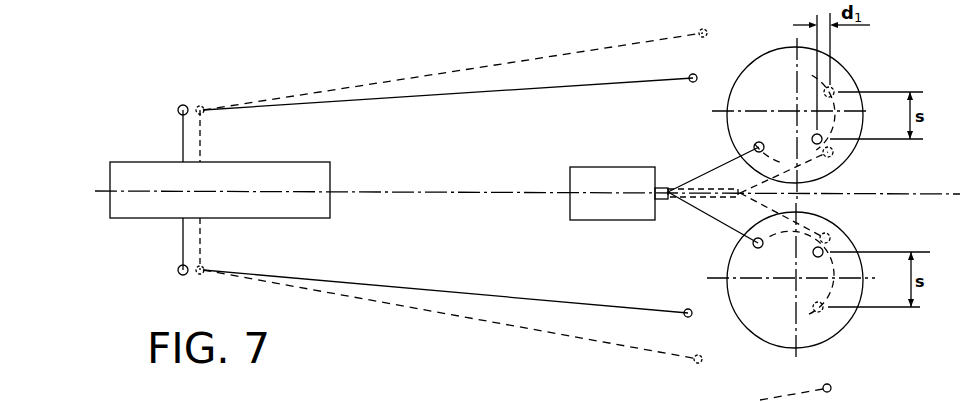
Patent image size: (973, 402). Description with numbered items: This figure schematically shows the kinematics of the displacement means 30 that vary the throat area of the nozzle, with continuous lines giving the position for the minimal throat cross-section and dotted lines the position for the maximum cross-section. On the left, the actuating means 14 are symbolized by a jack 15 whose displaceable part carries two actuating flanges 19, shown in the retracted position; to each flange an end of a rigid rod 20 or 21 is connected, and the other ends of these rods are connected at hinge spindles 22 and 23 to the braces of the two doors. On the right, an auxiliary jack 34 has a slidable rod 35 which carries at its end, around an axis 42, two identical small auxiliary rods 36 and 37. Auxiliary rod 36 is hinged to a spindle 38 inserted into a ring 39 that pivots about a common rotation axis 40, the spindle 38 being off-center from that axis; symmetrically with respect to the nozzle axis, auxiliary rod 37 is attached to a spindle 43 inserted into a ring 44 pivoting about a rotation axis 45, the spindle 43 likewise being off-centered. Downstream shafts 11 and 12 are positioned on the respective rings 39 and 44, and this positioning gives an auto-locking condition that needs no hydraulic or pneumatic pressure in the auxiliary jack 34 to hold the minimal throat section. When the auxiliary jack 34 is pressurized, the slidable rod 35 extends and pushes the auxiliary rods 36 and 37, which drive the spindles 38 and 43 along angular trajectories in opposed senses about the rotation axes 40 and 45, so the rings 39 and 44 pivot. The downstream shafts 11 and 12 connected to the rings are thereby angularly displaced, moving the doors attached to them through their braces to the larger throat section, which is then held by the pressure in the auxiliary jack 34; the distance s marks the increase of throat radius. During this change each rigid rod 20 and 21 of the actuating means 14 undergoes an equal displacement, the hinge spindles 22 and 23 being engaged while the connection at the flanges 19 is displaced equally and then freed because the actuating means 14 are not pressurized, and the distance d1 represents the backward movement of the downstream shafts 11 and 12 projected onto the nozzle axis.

The downstream shaft 11 is at (833, 153).
The downstream shaft 12 is at (830, 240).
The actuating means 14 is at (195, 188).
The jack 15 is at (125, 173).
The actuating flanges 19 is at (183, 132).
The rigid rod 20 is at (408, 98).
The rigid rod 21 is at (407, 288).
The hinge spindle 22 is at (690, 75).
The hinge spindle 23 is at (687, 318).
The displacement means 30 is at (896, 188).
The auxiliary jack 34 is at (570, 183).
The slidable rod 35 is at (661, 189).
The auxiliary rod 36 is at (703, 175).
The auxiliary rod 37 is at (695, 212).
The spindle 38 is at (754, 147).
The ring 39 is at (775, 55).
The rotation axis 40 is at (797, 110).
The axis 42 is at (668, 200).
The spindle 43 is at (750, 245).
The ring 44 is at (825, 325).
The rotation axis 45 is at (793, 278).